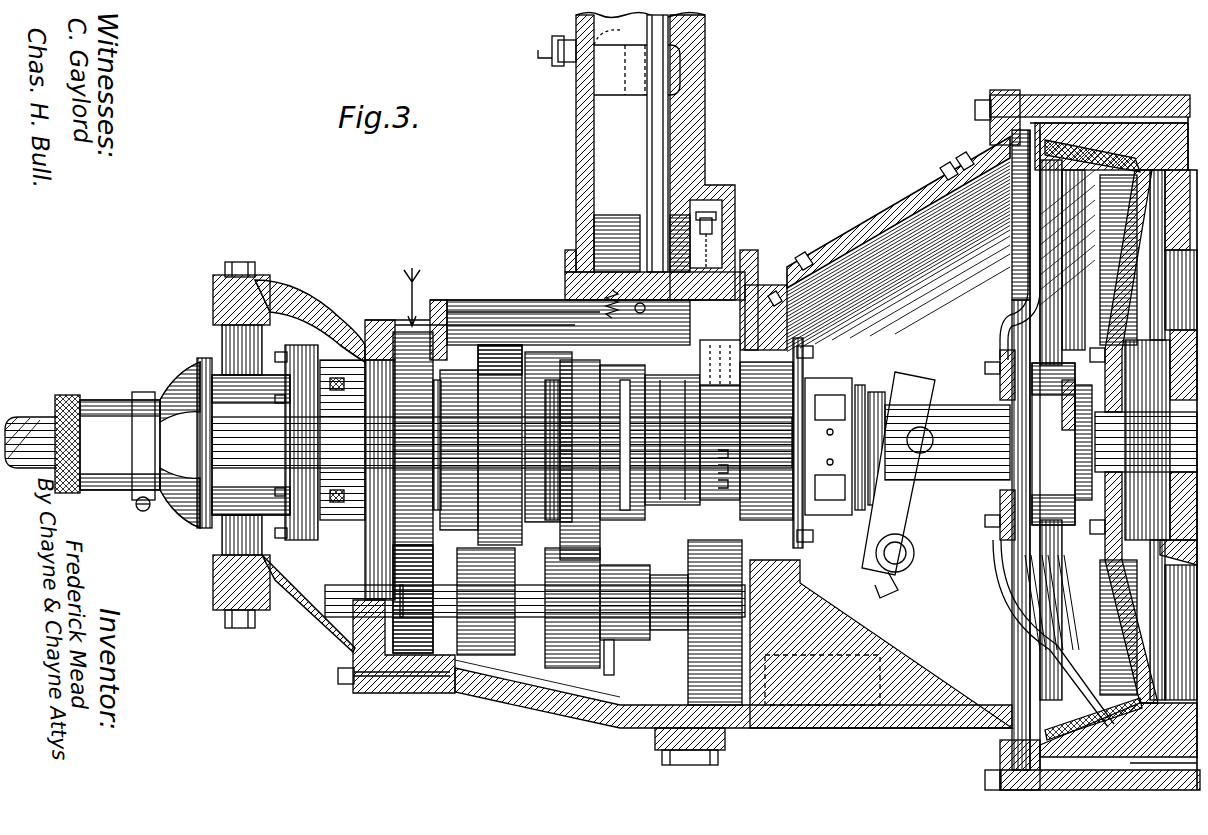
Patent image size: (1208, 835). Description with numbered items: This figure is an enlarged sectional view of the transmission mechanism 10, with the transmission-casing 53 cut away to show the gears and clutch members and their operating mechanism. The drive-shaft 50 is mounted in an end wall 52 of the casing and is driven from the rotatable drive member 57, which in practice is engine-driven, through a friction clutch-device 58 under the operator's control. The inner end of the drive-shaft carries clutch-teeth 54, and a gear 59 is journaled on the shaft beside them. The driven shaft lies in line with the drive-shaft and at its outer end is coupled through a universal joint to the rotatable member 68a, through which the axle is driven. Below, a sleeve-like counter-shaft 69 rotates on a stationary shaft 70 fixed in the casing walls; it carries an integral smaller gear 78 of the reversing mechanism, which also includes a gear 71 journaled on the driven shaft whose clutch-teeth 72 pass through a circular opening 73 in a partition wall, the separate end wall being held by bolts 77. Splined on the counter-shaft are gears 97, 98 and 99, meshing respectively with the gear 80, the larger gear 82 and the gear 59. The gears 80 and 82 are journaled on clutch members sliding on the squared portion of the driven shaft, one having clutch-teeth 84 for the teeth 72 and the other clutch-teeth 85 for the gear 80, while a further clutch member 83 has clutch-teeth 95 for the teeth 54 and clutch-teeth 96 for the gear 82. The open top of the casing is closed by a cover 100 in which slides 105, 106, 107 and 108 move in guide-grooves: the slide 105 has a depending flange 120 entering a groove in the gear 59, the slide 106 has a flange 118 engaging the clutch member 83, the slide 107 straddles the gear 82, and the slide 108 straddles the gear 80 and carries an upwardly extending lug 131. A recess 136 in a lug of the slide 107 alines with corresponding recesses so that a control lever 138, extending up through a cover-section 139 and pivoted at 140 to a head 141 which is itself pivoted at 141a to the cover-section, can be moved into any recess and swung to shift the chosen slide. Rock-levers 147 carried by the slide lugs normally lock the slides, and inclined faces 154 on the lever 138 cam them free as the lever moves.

The transmission 10 is at (406, 297).
The drive-shaft 50 is at (875, 420).
The end wall 52 is at (798, 258).
The transmission-casing 53 is at (545, 706).
The clutch-teeth 54 is at (676, 505).
The rotatable drive member 57 is at (1158, 150).
The friction clutch-device 58 is at (1096, 123).
The gear 59 is at (803, 525).
The rotatable member 68a is at (106, 420).
The counter-shaft 69 is at (640, 620).
The stationary shaft 70 is at (800, 590).
The gear 71 is at (368, 318).
The clutch-teeth 72 is at (425, 340).
The circular opening 73 is at (440, 380).
The bolts 77 is at (338, 676).
The gear 78 is at (408, 635).
The gear 80 is at (498, 400).
The gear 82 is at (545, 370).
The clutch member 83 is at (642, 512).
The clutch-teeth 84 is at (460, 380).
The clutch-teeth 85 is at (552, 520).
The clutch-teeth 95 is at (668, 628).
The clutch-teeth 96 is at (620, 630).
The gear 97 is at (490, 640).
The gear 98 is at (570, 655).
The gear 99 is at (728, 690).
The cover 100 is at (478, 345).
The slide 105 is at (716, 362).
The slide 106 is at (576, 318).
The slide 107 is at (552, 300).
The slide 108 is at (505, 345).
The depending flange 118 is at (630, 500).
The depending flange 120 is at (772, 285).
The lug 131 is at (735, 215).
The recess 136 is at (700, 226).
The control lever 138 is at (660, 128).
The cover-section 139 is at (706, 97).
The pivot 140 is at (665, 75).
The head 141 is at (590, 100).
The pivot 141a is at (560, 66).
The rock-levers 147 is at (614, 288).
The inclined face 154 is at (638, 302).